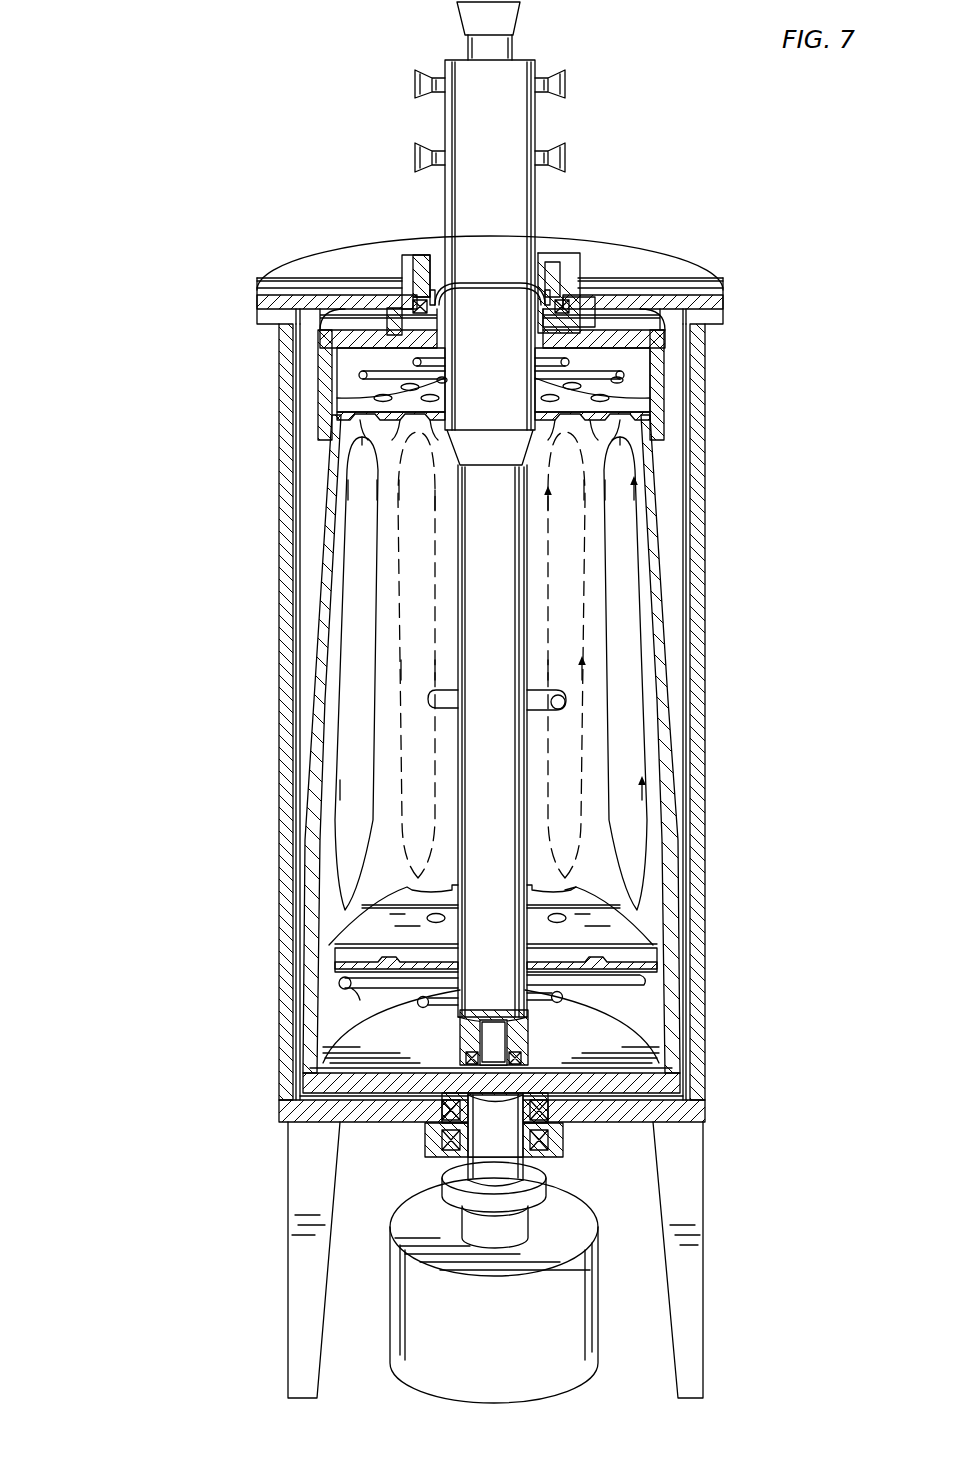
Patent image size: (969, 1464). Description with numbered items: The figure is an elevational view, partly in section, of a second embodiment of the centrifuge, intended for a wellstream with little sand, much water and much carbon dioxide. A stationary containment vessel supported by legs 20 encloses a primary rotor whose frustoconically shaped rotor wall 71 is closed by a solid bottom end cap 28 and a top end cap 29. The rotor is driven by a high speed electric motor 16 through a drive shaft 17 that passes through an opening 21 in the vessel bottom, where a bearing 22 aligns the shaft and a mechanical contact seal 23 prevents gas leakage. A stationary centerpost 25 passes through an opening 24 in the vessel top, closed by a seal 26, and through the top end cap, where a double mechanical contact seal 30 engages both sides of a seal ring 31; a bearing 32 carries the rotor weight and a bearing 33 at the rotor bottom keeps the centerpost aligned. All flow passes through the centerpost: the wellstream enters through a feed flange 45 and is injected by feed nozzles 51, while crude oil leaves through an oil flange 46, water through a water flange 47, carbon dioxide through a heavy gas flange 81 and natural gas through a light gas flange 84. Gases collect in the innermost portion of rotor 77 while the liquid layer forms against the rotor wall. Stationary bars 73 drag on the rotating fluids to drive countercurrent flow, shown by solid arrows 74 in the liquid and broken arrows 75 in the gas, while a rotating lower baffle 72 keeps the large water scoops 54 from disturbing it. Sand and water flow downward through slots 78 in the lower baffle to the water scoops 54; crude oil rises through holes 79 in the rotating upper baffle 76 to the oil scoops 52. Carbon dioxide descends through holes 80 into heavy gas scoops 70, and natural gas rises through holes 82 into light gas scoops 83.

The high speed electric motor 16 is at (390, 1312).
The drive shaft 17 is at (545, 1195).
The legs 20 is at (290, 1240).
The opening 21 is at (540, 1170).
The bearing 22 is at (440, 1125).
The mechanical contact seal 23 is at (442, 1140).
The opening 24 is at (540, 250).
The centerpost 25 is at (510, 557).
The seal 26 is at (560, 262).
The bottom end cap 28 is at (360, 1033).
The top end cap 29 is at (360, 330).
The double mechanical contact seal 30 is at (572, 288).
The seal ring 31 is at (483, 282).
The bearing 32 is at (575, 305).
The bearing 33 is at (460, 1058).
The feed flange 45 is at (513, 42).
The oil flange 46 is at (566, 158).
The water flange 47 is at (414, 158).
The feed nozzles 51 is at (430, 708).
The oil scoops 52 is at (360, 375).
The water scoops 54 is at (345, 990).
The heavy gas scoops 70 is at (432, 1008).
The rotor wall 71 is at (700, 652).
The rotating lower baffle 72 is at (572, 880).
The stationary bars 73 is at (338, 955).
The solid arrows 74 is at (345, 610).
The broken arrows 75 is at (398, 768).
The upper baffle 76 is at (345, 406).
The innermost portion of rotor 77 is at (398, 540).
The slots 78 is at (390, 890).
The holes 79 is at (365, 420).
The holes 80 is at (426, 918).
The heavy gas flange 81 is at (414, 85).
The holes 82 is at (491, 655).
The light gas scoops 83 is at (408, 336).
The light gas flange 84 is at (566, 85).